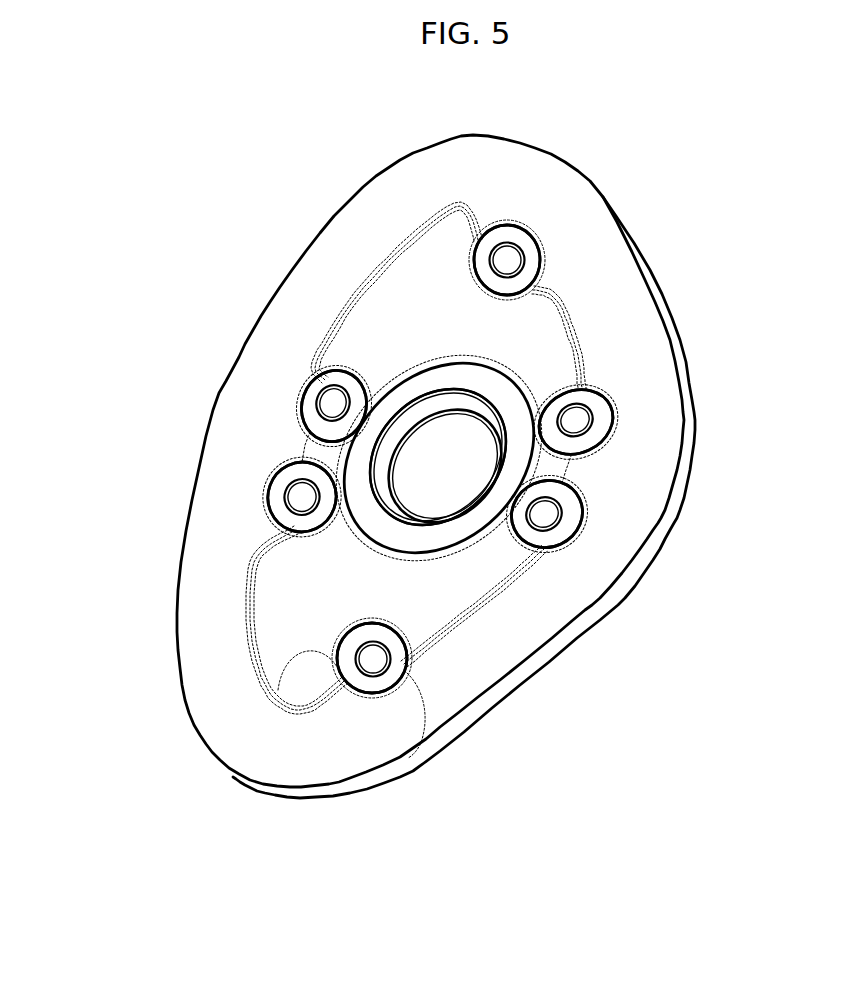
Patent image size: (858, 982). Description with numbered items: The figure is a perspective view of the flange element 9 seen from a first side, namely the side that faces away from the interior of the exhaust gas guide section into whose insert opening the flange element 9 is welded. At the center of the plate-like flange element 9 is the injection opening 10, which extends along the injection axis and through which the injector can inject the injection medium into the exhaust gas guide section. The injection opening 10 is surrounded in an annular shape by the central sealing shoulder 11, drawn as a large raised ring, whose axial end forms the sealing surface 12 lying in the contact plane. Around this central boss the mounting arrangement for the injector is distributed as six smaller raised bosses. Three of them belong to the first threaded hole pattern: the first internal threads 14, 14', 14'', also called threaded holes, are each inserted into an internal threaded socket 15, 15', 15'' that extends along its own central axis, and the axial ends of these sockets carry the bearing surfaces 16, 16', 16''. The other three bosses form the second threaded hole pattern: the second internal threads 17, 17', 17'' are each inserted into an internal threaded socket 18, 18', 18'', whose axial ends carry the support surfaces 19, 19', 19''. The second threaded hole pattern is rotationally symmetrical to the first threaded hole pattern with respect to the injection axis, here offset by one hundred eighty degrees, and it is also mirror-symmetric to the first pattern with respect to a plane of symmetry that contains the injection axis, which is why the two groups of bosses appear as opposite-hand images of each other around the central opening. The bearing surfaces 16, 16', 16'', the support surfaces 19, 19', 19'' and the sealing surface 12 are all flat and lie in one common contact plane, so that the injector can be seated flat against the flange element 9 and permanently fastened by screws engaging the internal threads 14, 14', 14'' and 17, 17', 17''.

The flange element 9 is at (236, 180).
The injection opening 10 is at (438, 470).
The central sealing shoulder 11 is at (493, 365).
The sealing surface 12 is at (493, 360).
The first internal thread 14 is at (382, 738).
The internal threaded socket 15 is at (379, 735).
The bearing surface 16 is at (304, 745).
The second internal thread 17 is at (566, 195).
The internal threaded socket 18 is at (564, 197).
The support surface 19 is at (570, 217).
The first internal thread 14' is at (245, 363).
The internal threaded socket 15' is at (249, 366).
The bearing surface 16' is at (240, 393).
The second internal thread 17' is at (609, 561).
The internal threaded socket 18' is at (606, 558).
The support surface 19' is at (620, 540).
The first internal thread 14'' is at (680, 407).
The internal threaded socket 15'' is at (677, 410).
The bearing surface 16'' is at (659, 423).
The second internal thread 17'' is at (204, 491).
The internal threaded socket 18'' is at (207, 494).
The support surface 19'' is at (197, 514).